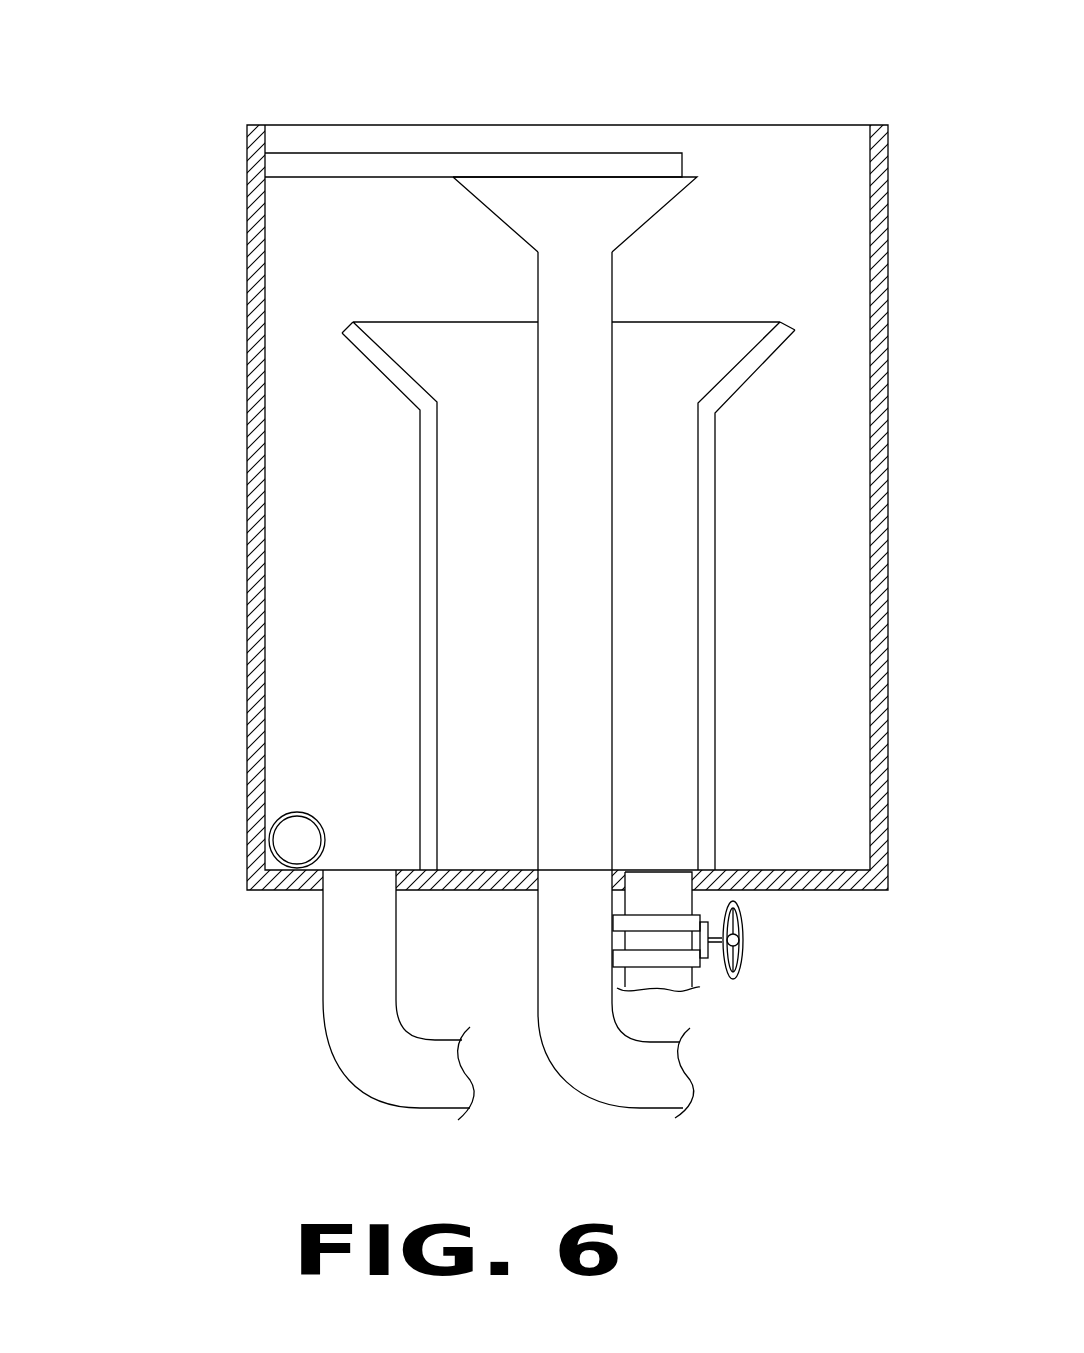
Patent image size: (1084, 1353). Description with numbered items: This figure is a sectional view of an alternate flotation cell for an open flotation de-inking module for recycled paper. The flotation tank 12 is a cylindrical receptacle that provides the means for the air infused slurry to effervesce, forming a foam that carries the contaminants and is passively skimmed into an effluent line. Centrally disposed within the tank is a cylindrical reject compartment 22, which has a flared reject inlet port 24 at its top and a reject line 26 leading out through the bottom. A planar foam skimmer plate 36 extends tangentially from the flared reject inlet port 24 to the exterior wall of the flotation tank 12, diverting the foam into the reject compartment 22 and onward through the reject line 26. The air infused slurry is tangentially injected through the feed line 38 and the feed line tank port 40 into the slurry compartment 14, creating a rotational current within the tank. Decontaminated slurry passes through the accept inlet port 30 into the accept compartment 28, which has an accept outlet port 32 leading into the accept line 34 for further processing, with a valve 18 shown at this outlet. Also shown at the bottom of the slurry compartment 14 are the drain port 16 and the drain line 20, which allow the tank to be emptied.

The flotation tank 12 is at (213, 97).
The slurry compartment 14 is at (403, 552).
The drain port 16 is at (362, 873).
The valve 18 is at (746, 941).
The drain line 20 is at (322, 963).
The reject compartment 22 is at (601, 481).
The reject inlet port 24 is at (568, 177).
The reject line 26 is at (558, 1068).
The accept compartment 28 is at (690, 577).
The accept inlet port 30 is at (423, 322).
The accept outlet port 32 is at (648, 870).
The accept line 34 is at (660, 990).
The foam skimmer plate 36 is at (380, 167).
The feed line 38 is at (278, 822).
The feed line tank port 40 is at (293, 830).